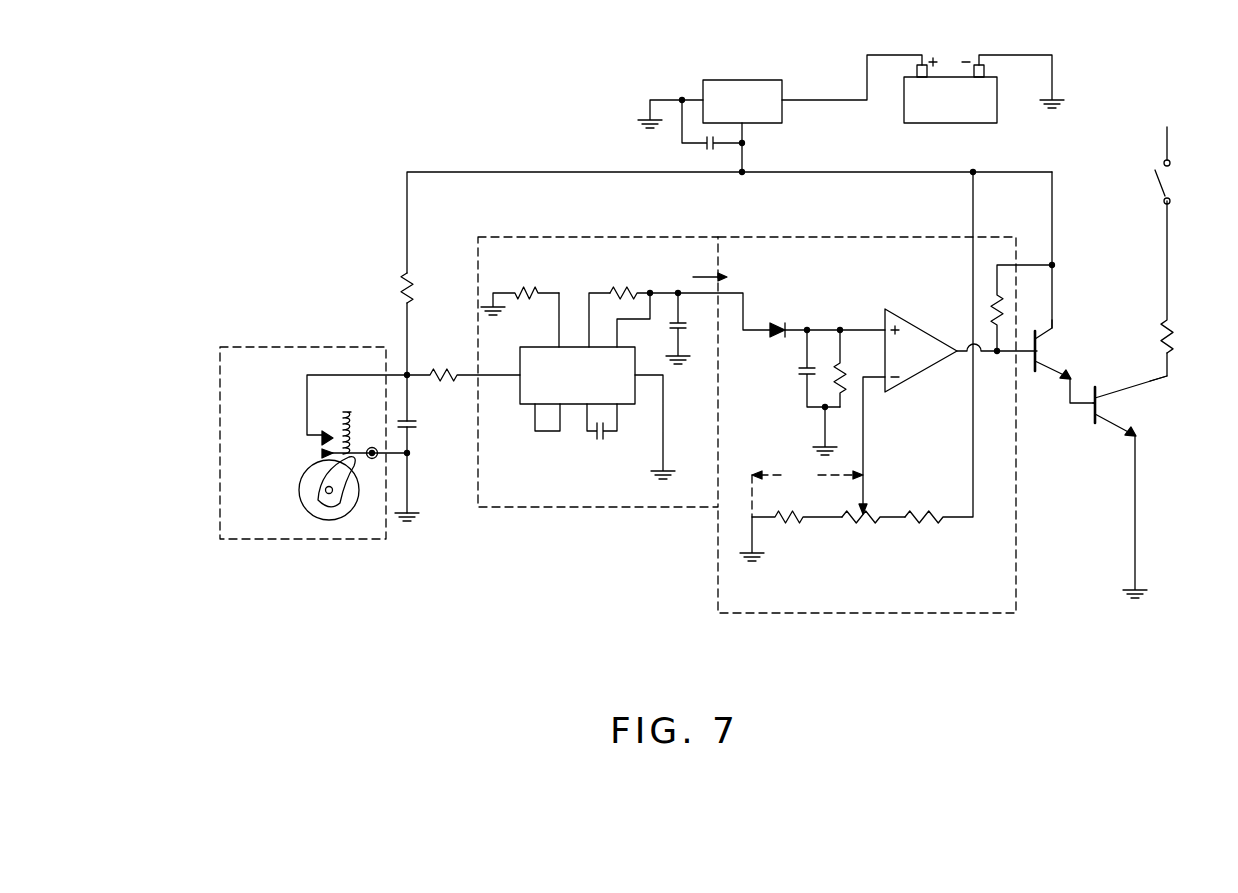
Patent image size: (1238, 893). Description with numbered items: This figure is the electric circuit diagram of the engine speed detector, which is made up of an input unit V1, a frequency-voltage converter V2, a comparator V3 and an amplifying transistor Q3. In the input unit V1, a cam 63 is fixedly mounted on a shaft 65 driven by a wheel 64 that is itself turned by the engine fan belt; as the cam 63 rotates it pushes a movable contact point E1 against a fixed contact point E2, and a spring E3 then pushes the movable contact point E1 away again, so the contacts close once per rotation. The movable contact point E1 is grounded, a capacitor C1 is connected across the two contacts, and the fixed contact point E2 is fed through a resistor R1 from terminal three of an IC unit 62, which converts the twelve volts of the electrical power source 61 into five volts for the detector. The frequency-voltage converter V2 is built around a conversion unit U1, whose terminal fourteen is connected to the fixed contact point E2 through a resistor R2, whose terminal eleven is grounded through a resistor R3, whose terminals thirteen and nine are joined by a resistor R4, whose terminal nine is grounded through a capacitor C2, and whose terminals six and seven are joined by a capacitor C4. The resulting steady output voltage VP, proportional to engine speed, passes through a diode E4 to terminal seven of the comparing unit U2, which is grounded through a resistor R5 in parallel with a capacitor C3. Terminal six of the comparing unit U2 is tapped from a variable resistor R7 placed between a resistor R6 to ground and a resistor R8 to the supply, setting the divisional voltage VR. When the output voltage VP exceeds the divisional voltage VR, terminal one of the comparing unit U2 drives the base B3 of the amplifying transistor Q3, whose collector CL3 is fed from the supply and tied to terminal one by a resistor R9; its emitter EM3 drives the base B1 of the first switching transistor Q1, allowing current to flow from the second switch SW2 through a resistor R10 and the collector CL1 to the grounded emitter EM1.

The electrical power source 61 is at (947, 123).
The IC unit 62 is at (750, 80).
The cam 63 is at (343, 502).
The wheel 64 is at (307, 513).
The cam shaft 65 is at (328, 500).
The input unit V1 is at (225, 540).
The frequency-voltage converter V2 is at (525, 508).
The comparator V3 is at (755, 614).
The resistor R1 is at (390, 288).
The resistor R2 is at (463, 363).
The resistor R3 is at (520, 289).
The resistor R4 is at (690, 296).
The resistor R5 is at (851, 368).
The resistor R6 is at (791, 522).
The variable resistor R7 is at (873, 531).
The resistor R8 is at (939, 361).
The resistor R9 is at (1021, 308).
The resistor R10 is at (1189, 277).
The capacitor C1 is at (422, 425).
The capacitor C2 is at (691, 328).
The capacitor C3 is at (805, 392).
The capacitor C4 is at (602, 437).
The conversion unit U1 is at (576, 405).
The comparing unit U2 is at (915, 382).
The movable contact point E1 is at (320, 452).
The fixed contact point E2 is at (320, 440).
The spring E3 is at (349, 436).
The diode E4 is at (827, 316).
The output voltage VP is at (724, 276).
The divisional voltage VR is at (807, 491).
The first switching transistor Q1 is at (1121, 474).
The amplifying transistor Q3 is at (1057, 287).
The base B1 is at (1087, 416).
The base B3 is at (1027, 342).
The collector CL1 is at (1142, 366).
The collector CL3 is at (1072, 326).
The emitter EM1 is at (1131, 502).
The emitter EM3 is at (1081, 377).
The second switch SW2 is at (1185, 165).